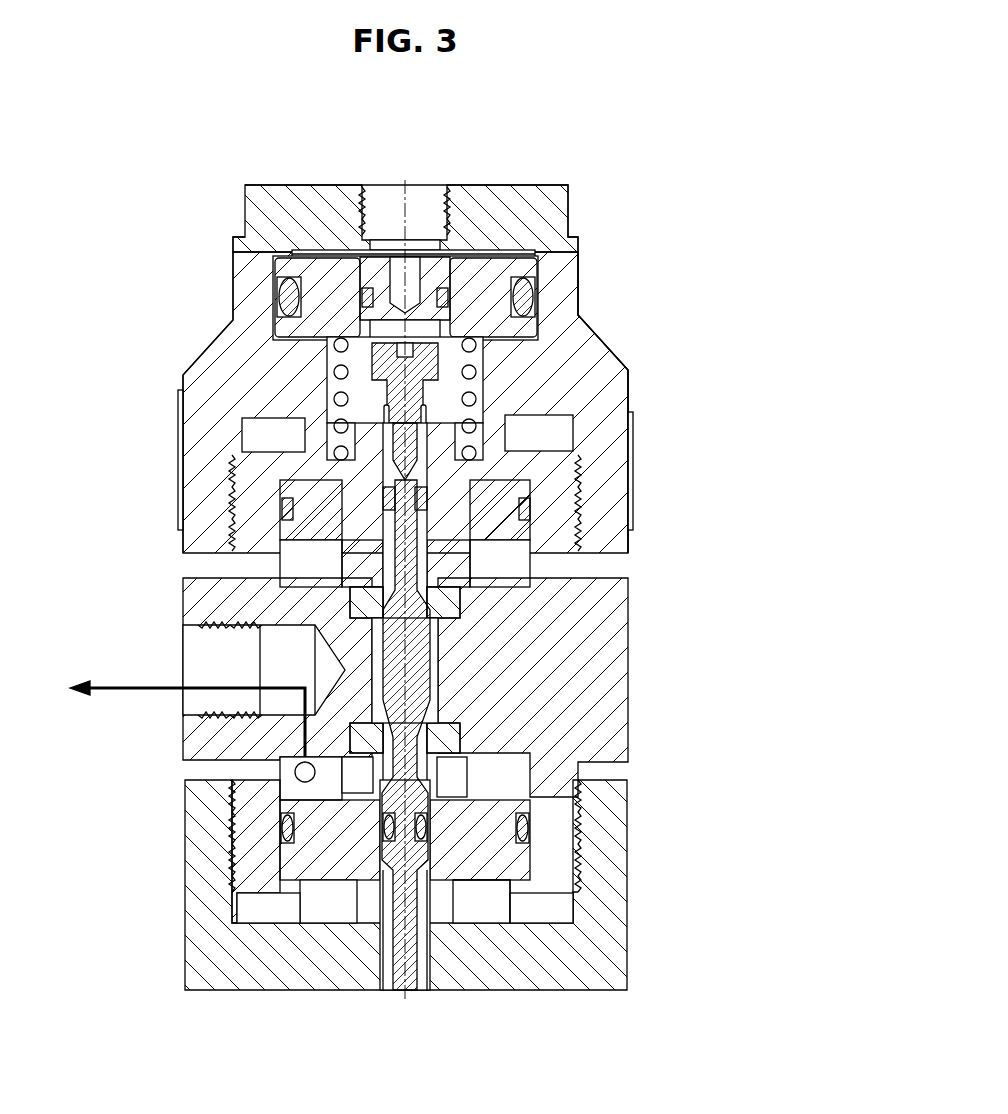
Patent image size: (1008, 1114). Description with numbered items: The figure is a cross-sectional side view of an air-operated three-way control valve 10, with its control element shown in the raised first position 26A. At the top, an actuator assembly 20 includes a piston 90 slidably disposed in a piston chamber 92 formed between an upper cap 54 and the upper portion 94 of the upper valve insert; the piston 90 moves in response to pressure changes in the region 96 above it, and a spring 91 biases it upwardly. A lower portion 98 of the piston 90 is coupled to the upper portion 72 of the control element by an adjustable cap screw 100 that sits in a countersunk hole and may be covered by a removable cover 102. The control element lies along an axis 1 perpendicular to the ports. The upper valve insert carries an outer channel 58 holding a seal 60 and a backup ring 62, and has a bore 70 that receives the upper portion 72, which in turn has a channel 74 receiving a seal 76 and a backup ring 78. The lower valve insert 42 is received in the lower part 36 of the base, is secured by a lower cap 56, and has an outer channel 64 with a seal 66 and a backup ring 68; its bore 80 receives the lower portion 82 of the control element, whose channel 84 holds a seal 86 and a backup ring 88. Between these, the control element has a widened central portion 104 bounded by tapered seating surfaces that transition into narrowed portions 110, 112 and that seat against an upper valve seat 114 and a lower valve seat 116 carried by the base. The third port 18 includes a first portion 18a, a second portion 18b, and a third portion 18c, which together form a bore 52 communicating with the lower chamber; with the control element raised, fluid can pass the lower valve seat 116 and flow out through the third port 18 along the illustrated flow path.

The control valve 10 is at (206, 221).
The spring 91 is at (268, 200).
The piston 90 is at (355, 255).
The removable cover 102 is at (372, 255).
The axis 1 is at (393, 205).
The region 96 is at (420, 262).
The adjustable cap screw 100 is at (442, 265).
The lower portion of the piston 98 is at (476, 262).
The piston chamber 92 is at (522, 285).
The actuator assembly 20 is at (526, 250).
The upper portion of the control element 72 is at (560, 277).
The upper cap 54 is at (562, 275).
The first position 26A is at (538, 350).
The channel 74 is at (548, 385).
The backup ring 78 is at (560, 410).
The outer channel 58 is at (585, 402).
The backup ring 62 is at (560, 462).
The seal 60 is at (560, 477).
The seal 76 is at (555, 545).
The bore 70 is at (330, 445).
The upper portion of the upper valve insert 94 is at (290, 410).
The narrowed portion 110 is at (395, 548).
The first portion of the third port 18a is at (235, 632).
The third port 18 is at (222, 643).
The second portion of the third port 18b is at (222, 697).
The bore 52 is at (235, 750).
The third portion of the third port 18c is at (300, 785).
The narrowed portion 112 is at (380, 797).
The seal 86 is at (288, 832).
The lower valve insert 42 is at (255, 885).
The upper valve seat 114 is at (460, 600).
The central portion 104 is at (575, 650).
The lower valve seat 116 is at (462, 740).
The seal 66 is at (538, 813).
The lower part of the base 36 is at (560, 835).
The backup ring 68 is at (538, 850).
The lower cap 56 is at (600, 935).
The bore 80 is at (372, 905).
The backup ring 88 is at (383, 930).
The channel 84 is at (407, 940).
The lower portion of the control element 82 is at (425, 930).
The outer channel 64 is at (495, 885).